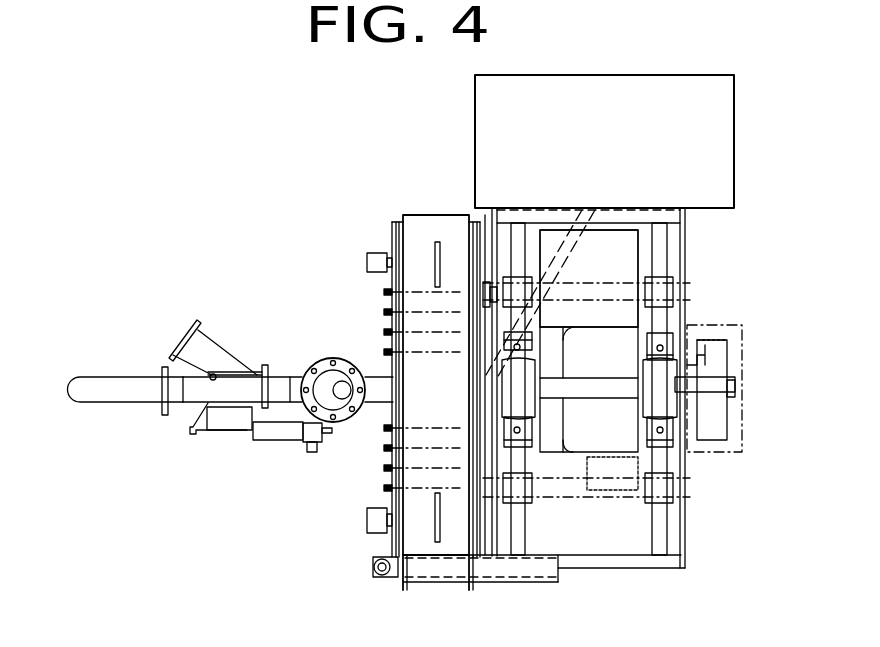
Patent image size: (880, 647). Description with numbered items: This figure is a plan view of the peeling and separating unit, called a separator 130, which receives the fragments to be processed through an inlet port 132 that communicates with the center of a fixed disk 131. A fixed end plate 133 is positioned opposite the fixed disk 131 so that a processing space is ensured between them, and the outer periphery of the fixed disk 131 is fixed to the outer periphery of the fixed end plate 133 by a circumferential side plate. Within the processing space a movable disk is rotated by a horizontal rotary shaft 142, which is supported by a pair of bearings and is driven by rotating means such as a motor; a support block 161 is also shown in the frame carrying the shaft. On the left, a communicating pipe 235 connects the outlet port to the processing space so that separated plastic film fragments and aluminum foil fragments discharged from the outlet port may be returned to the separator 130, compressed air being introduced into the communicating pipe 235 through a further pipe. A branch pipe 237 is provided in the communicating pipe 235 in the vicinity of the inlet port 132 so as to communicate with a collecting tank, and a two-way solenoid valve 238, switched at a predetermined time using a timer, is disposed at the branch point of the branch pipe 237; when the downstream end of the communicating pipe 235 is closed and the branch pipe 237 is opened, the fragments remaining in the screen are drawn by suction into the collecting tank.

The separator 130 is at (372, 190).
The fixed disk 131 is at (390, 232).
The inlet port 132 is at (323, 360).
The fixed end plate 133 is at (485, 238).
The horizontal rotary shaft 142 is at (608, 390).
The support block 161 is at (618, 340).
The communicating pipe 235 is at (93, 385).
The branch pipe 237 is at (198, 332).
The two-way solenoid valve 238 is at (288, 430).